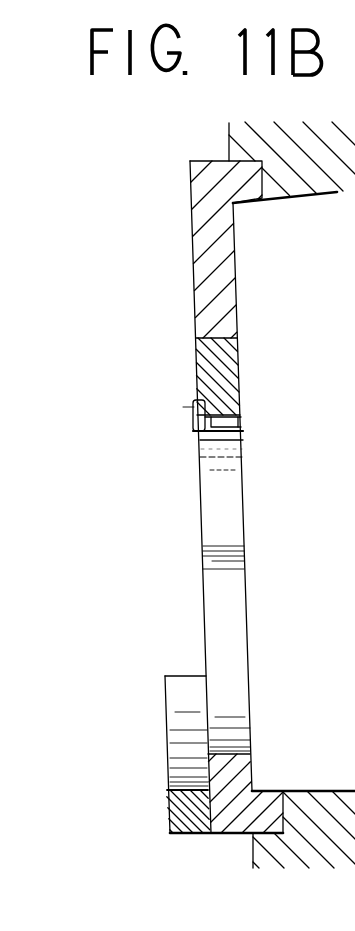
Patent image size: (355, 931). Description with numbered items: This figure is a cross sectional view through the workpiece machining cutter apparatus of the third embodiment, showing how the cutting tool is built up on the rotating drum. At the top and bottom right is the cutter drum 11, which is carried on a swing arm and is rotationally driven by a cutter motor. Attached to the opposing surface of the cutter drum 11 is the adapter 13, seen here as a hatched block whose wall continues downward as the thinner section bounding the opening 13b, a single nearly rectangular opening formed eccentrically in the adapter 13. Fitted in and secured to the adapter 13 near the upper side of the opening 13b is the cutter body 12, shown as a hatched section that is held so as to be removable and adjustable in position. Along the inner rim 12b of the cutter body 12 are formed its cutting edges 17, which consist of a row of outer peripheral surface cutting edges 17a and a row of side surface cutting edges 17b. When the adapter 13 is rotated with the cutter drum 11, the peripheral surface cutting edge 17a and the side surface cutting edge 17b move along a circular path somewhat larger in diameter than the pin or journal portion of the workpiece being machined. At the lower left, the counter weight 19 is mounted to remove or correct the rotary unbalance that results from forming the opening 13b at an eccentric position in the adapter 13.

The cutter drum 11 is at (303, 170).
The adapter 13 is at (218, 297).
The opening 13b is at (225, 618).
The cutter body 12 is at (228, 370).
The inner rim 12b is at (213, 420).
The cutting edges 17 is at (325, 430).
The outer peripheral surface cutting edge 17a is at (202, 433).
The side surface cutting edge 17b is at (200, 447).
The counter weight 19 is at (195, 817).